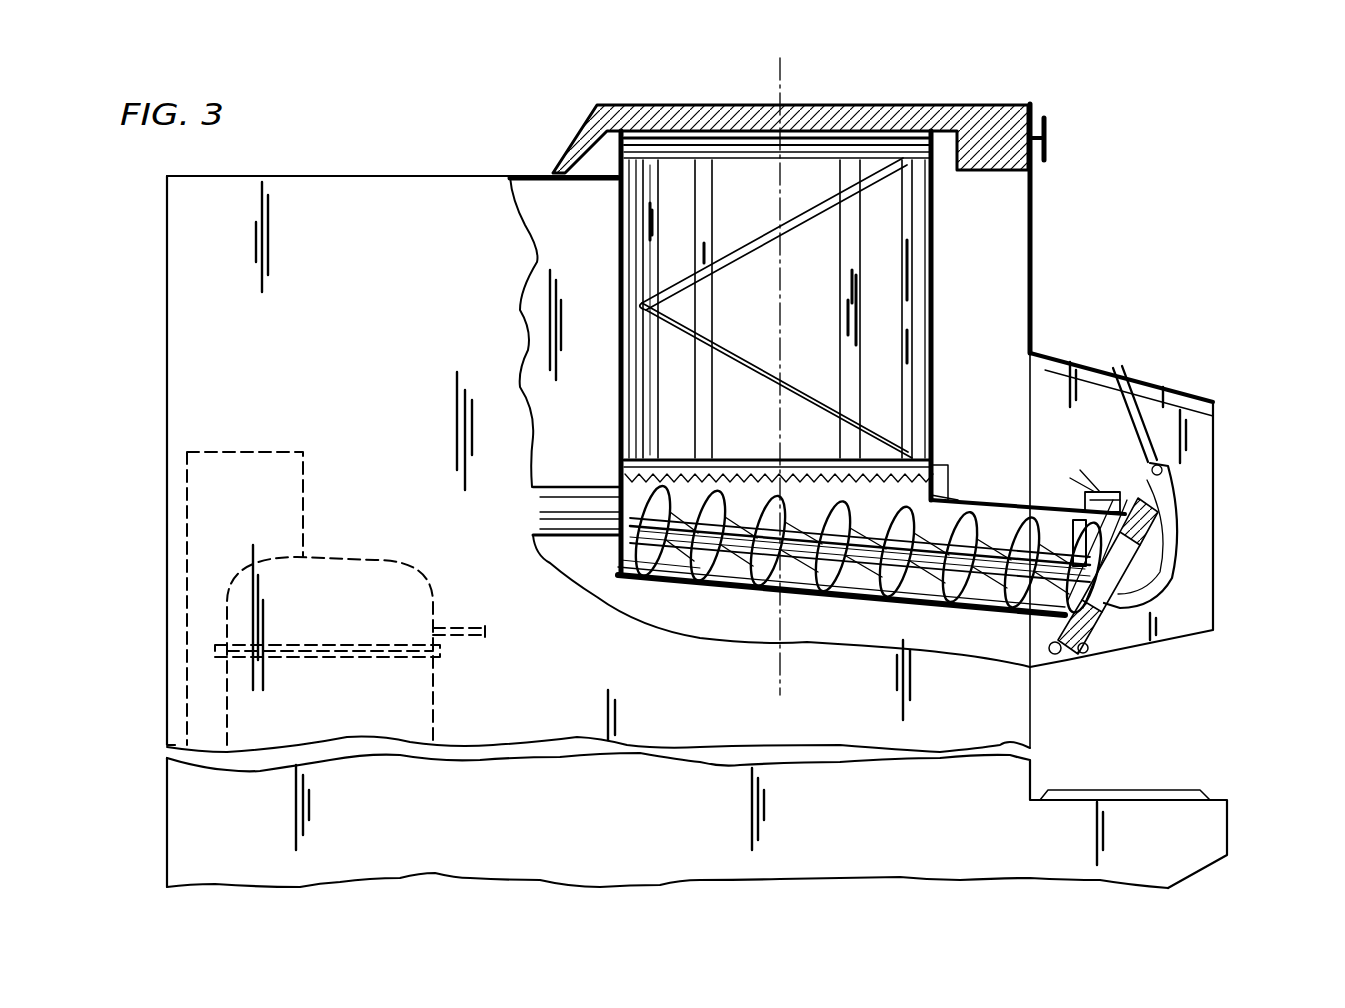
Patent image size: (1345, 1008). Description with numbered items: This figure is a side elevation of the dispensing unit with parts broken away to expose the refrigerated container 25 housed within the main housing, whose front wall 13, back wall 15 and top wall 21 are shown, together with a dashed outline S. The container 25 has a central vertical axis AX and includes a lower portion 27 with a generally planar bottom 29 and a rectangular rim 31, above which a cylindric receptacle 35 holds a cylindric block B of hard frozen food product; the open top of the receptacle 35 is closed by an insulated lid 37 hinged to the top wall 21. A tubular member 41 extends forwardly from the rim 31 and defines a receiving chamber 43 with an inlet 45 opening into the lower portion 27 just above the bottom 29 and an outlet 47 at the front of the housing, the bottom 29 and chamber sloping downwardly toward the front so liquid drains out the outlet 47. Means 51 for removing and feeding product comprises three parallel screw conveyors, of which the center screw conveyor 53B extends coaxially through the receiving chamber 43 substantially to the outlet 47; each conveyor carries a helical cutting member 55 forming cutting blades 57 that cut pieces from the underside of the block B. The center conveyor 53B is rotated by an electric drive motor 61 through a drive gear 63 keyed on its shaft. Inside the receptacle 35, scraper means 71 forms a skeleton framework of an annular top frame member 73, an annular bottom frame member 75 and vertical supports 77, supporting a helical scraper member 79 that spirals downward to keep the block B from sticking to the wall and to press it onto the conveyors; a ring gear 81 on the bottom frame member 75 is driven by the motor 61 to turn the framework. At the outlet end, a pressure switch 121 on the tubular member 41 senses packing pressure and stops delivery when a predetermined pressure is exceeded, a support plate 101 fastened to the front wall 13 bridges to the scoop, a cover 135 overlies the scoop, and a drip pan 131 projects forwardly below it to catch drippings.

The front wall 13 is at (1035, 282).
The back wall 15 is at (167, 300).
The top wall 21 is at (327, 176).
The refrigerated container 25 is at (948, 303).
The lower portion 27 is at (600, 610).
The bottom 29 is at (832, 592).
The rim 31 is at (935, 490).
The cylindric receptacle 35 is at (937, 268).
The insulated lid 37 is at (1036, 118).
The tubular member 41 is at (1025, 594).
The receiving chamber 43 is at (1010, 500).
The inlet 45 is at (962, 498).
The outlet 47 is at (1005, 622).
The means for removing and feeding product 51 is at (692, 582).
The center screw conveyor 53B is at (782, 562).
The helical cutting member 55 is at (655, 602).
The cutting blades 57 is at (762, 592).
The electric drive motor 61 is at (568, 487).
The drive gear 63 is at (585, 538).
The scraper means 71 is at (915, 215).
The annular top frame member 73 is at (815, 128).
The annular bottom frame member 75 is at (618, 455).
The vertical supports 77 is at (715, 200).
The helical scraper member 79 is at (755, 362).
The ring gear 81 is at (948, 470).
The support plate 101 is at (1058, 662).
The pressure switch 121 is at (1098, 490).
The drip pan 131 is at (1215, 830).
The cover 135 is at (1188, 545).
The central vertical axis AX is at (775, 78).
The cylindric block of frozen food product B is at (615, 232).
The silo outline S is at (328, 552).